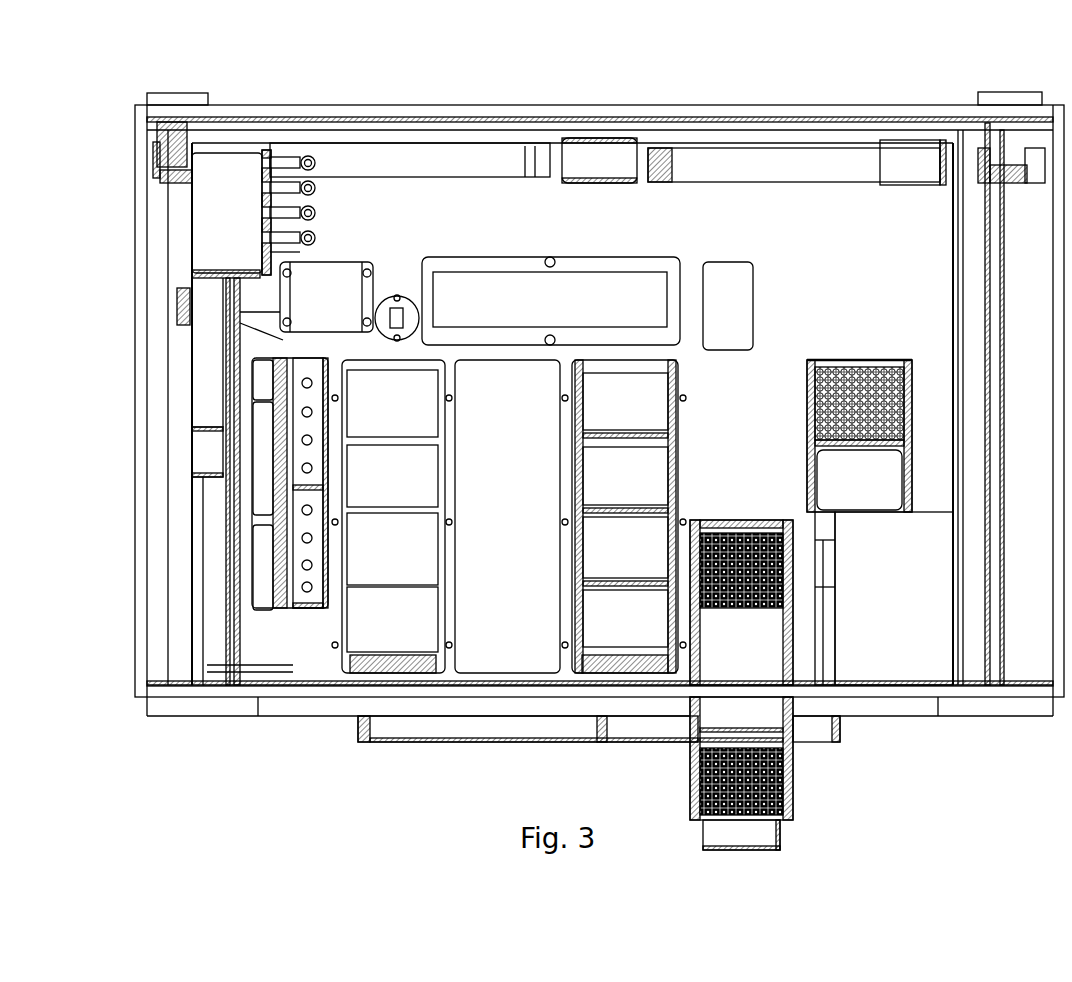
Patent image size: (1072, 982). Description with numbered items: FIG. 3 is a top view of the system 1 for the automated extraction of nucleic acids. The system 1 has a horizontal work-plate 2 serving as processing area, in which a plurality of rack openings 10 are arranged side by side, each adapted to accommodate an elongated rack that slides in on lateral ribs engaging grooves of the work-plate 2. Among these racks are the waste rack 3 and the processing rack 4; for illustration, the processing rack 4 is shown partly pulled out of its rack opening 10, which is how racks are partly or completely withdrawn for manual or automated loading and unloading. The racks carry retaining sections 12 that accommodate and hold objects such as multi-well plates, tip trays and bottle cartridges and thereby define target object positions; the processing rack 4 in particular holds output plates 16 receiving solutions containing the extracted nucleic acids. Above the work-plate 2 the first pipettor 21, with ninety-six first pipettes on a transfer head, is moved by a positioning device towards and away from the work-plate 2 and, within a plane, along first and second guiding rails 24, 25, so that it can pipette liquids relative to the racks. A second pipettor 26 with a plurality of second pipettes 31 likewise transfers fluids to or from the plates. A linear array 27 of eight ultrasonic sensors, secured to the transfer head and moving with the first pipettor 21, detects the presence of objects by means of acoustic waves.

The system 1 is at (152, 752).
The work-plate 2 is at (803, 251).
The waste rack 3 is at (858, 360).
The processing rack 4 is at (700, 808).
The rack openings 10 is at (560, 496).
The retaining sections 12 is at (404, 416).
The output plates 16 is at (700, 775).
The first pipettor 21 is at (906, 594).
The first guiding rail 24 is at (740, 160).
The second guiding rail 25 is at (180, 250).
The second pipettor 26 is at (215, 215).
The linear array 27 is at (822, 640).
The second pipettes 31 is at (295, 205).